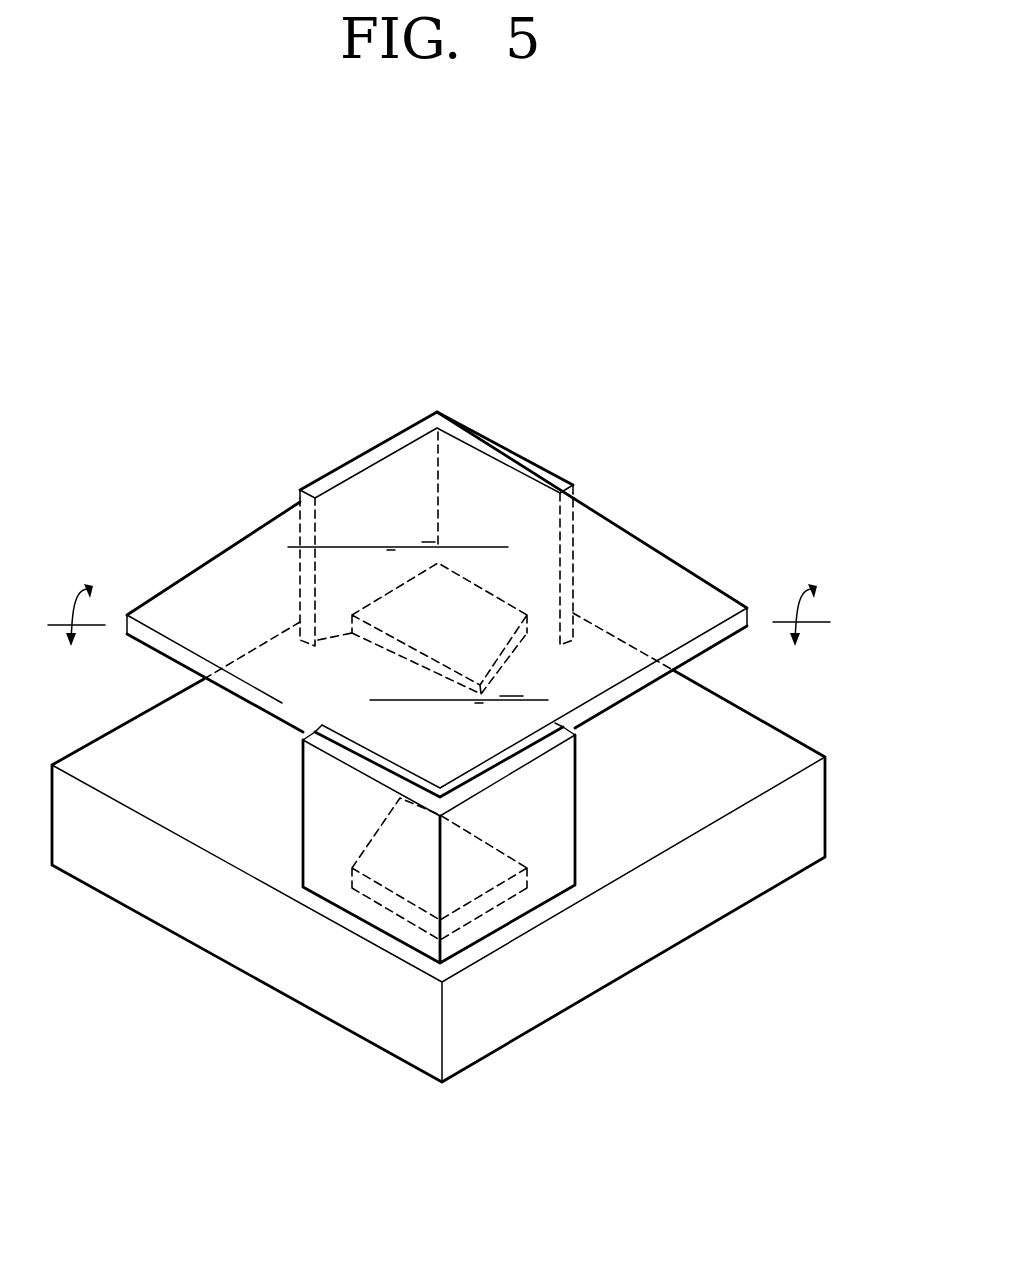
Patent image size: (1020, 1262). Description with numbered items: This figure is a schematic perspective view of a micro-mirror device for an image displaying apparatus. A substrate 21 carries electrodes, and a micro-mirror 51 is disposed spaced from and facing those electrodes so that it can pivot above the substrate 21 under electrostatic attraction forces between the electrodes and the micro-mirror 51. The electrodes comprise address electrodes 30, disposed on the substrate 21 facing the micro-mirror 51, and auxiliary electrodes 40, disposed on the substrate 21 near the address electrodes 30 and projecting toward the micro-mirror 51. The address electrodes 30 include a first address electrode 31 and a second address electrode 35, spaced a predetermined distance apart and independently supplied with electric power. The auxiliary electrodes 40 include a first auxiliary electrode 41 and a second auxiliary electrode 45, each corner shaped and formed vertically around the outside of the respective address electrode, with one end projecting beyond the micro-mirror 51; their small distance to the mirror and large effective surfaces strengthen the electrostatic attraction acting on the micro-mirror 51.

The substrate 21 is at (787, 758).
The micro-mirror 51 is at (665, 568).
The address electrodes 30 is at (524, 751).
The first address electrode 31 is at (472, 847).
The second address electrode 35 is at (503, 647).
The auxiliary electrodes 40 is at (311, 710).
The first auxiliary electrode 41 is at (303, 863).
The second auxiliary electrode 45 is at (312, 608).